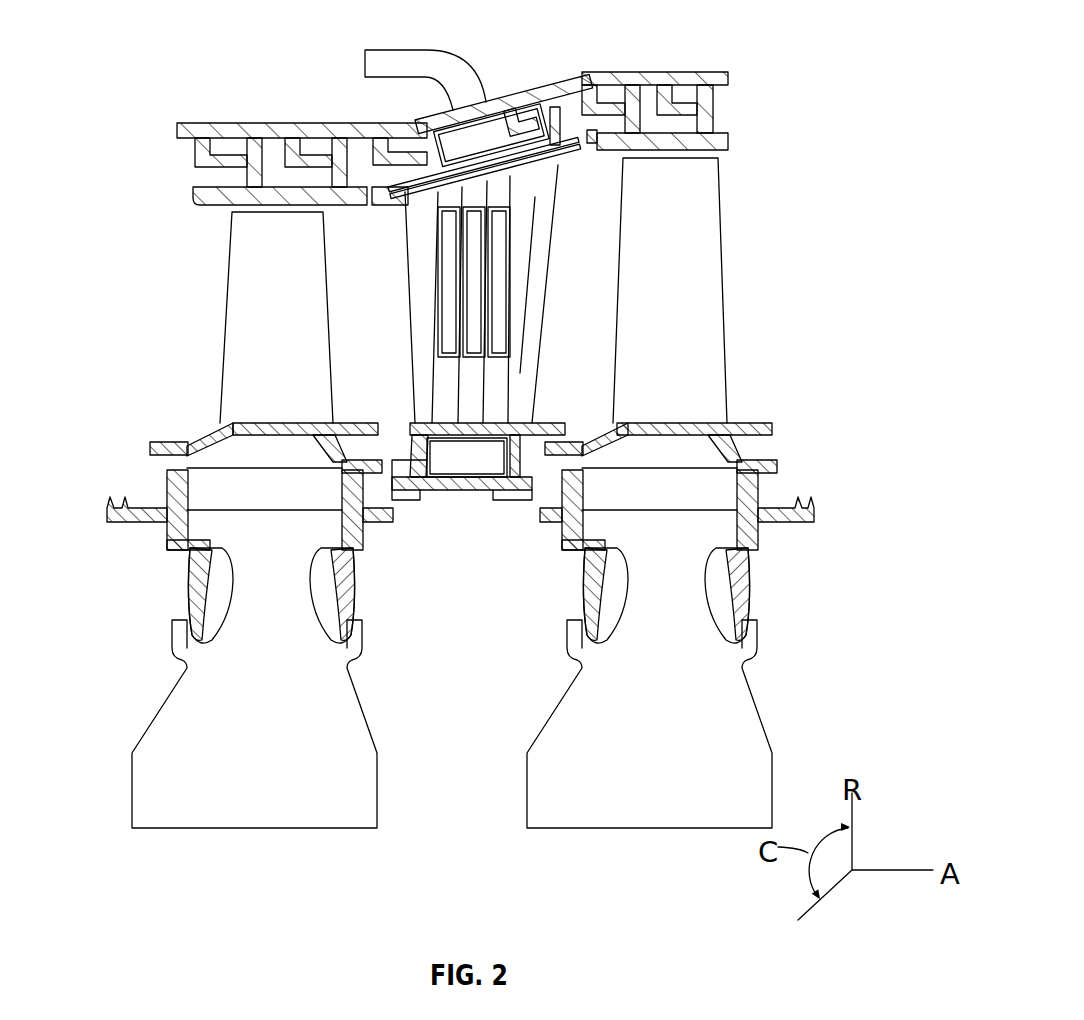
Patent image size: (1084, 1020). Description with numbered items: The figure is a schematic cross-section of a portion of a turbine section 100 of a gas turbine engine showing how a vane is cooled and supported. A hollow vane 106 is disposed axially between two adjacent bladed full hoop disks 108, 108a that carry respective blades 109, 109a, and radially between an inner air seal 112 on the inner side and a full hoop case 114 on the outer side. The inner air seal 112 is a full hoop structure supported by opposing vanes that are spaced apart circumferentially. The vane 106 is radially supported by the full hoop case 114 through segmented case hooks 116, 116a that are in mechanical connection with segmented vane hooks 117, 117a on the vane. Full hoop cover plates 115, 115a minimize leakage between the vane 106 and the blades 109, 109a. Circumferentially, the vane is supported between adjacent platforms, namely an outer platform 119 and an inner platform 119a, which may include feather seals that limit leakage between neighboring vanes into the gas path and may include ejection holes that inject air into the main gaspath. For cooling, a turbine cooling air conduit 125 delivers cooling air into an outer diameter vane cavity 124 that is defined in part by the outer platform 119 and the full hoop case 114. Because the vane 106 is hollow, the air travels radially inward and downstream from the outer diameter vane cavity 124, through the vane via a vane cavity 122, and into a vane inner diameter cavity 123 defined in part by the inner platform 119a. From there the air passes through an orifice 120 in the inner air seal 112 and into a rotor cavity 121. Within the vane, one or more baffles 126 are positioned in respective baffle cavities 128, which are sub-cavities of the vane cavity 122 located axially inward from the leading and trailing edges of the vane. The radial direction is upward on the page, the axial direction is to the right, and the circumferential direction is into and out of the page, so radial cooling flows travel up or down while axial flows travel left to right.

The turbine section assembly 100 is at (182, 50).
The vane 106 is at (540, 250).
The bladed full hoop disk 108 is at (755, 762).
The bladed full hoop disk 108a is at (142, 790).
The blade 109 is at (722, 272).
The blade 109a is at (227, 273).
The inner air seal 112 is at (565, 487).
The full hoop case 114 is at (722, 80).
The full hoop cover plate 115 is at (735, 580).
The full hoop cover plate 115a is at (345, 578).
The segmented case hook 116 is at (503, 113).
The segmented case hook 116a is at (380, 140).
The segmented vane hook 117 is at (553, 97).
The segmented vane hook 117a is at (410, 143).
The outer platform 119 is at (587, 143).
The inner platform 119a is at (403, 432).
The orifice 120 is at (448, 488).
The rotor cavity 121 is at (469, 658).
The vane cavity 122 is at (525, 317).
The vane inner diameter cavity 123 is at (458, 468).
The outer diameter vane cavity 124 is at (476, 128).
The turbine cooling air conduit 125 is at (374, 50).
The baffle 126 is at (448, 270).
The baffle cavity 128 is at (435, 323).